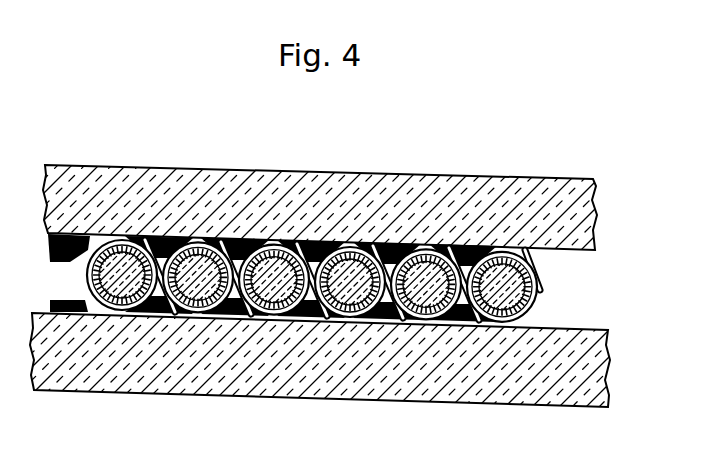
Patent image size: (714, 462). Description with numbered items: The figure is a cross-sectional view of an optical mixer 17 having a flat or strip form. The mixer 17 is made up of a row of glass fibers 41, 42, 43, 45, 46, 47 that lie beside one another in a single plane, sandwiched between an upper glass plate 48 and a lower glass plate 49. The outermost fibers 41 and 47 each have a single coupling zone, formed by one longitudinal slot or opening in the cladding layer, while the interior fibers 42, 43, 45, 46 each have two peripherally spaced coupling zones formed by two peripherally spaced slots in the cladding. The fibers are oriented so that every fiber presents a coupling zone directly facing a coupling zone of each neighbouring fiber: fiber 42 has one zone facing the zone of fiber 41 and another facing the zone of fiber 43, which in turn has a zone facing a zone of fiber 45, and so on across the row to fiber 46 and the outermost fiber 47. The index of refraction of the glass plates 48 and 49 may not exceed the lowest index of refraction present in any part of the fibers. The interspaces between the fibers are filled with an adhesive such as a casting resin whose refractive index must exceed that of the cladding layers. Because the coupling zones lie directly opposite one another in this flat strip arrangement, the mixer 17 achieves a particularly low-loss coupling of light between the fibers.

The mixer 17 is at (148, 155).
The glass fiber 41 is at (96, 266).
The glass fiber 42 is at (194, 242).
The glass fiber 43 is at (280, 244).
The glass fiber 45 is at (357, 246).
The glass fiber 46 is at (431, 248).
The glass fiber 47 is at (511, 250).
The glass plate 48 is at (597, 221).
The glass plate 49 is at (606, 366).